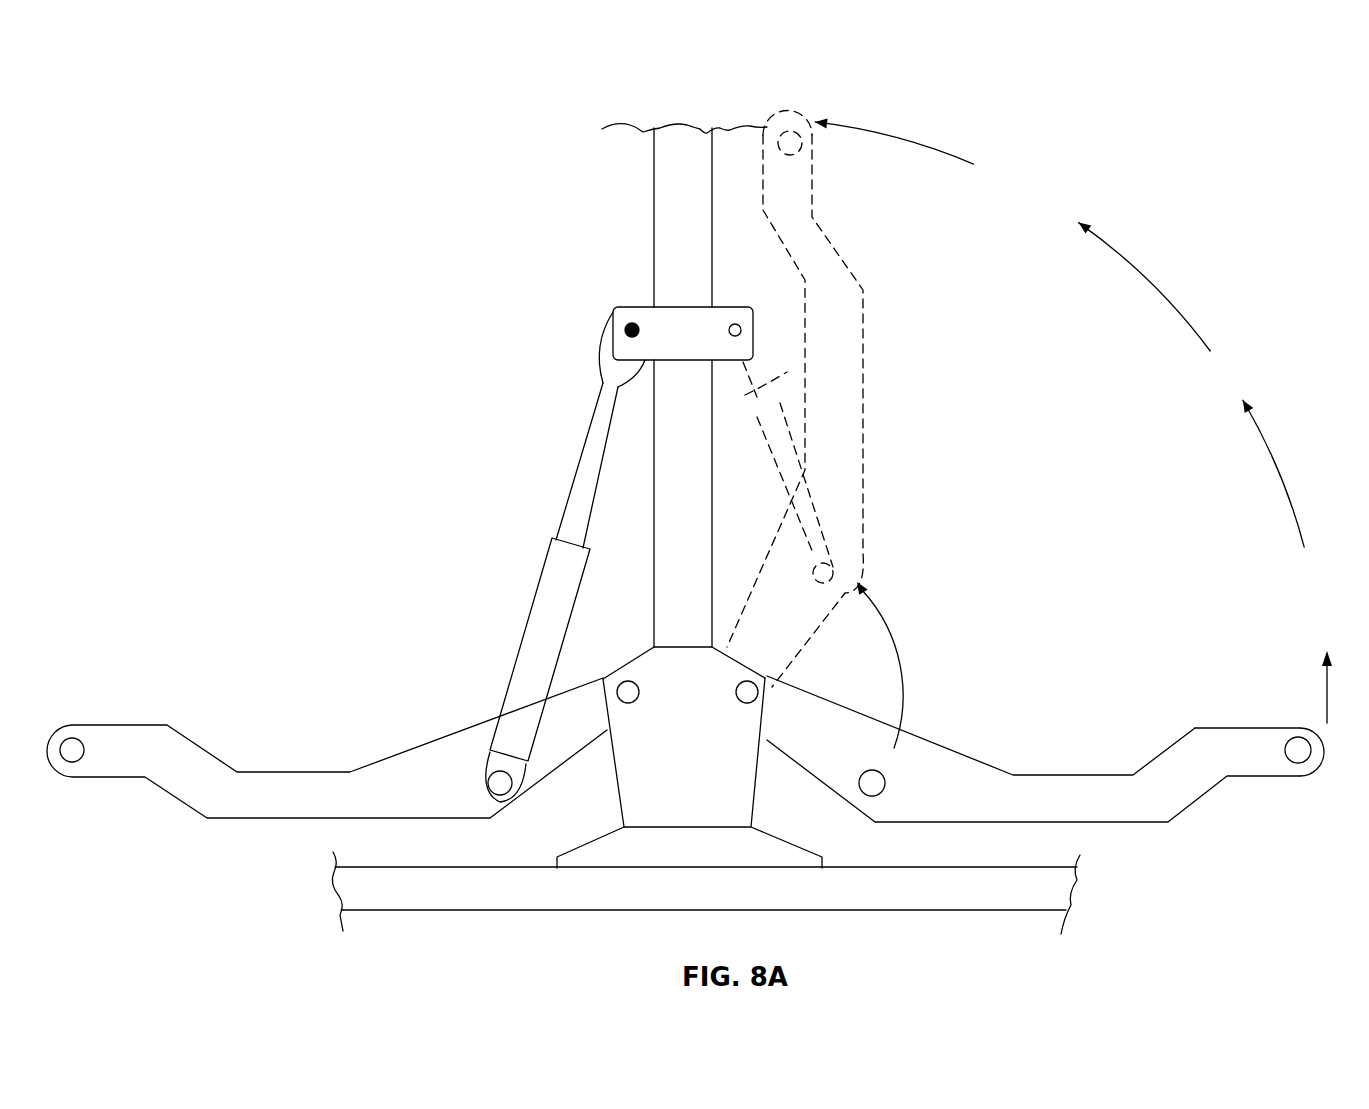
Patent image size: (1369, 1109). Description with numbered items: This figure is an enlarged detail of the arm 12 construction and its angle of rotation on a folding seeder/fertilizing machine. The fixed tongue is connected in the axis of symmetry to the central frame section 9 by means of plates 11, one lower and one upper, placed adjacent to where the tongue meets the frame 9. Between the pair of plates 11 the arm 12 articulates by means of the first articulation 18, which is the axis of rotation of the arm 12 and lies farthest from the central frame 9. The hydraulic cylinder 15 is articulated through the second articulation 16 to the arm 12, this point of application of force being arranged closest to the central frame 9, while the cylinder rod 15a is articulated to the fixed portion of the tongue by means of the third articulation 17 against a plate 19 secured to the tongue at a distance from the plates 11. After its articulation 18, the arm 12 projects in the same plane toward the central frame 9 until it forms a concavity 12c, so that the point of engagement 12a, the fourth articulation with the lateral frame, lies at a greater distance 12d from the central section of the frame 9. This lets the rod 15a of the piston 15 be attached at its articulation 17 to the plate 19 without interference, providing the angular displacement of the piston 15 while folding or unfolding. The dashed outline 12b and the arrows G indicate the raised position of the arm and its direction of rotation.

The central frame section 9 is at (1025, 893).
The plates 11 is at (655, 757).
The arm 12 is at (130, 753).
The point of engagement 12a is at (1318, 773).
The arm in raised position 12b is at (868, 360).
The concavity 12c is at (1093, 775).
The distance 12d is at (1250, 722).
The hydraulic cylinder 15 is at (547, 610).
The cylinder rod 15a is at (590, 477).
The second articulation 16 is at (490, 779).
The third articulation 17 is at (632, 330).
The first articulation 18 is at (600, 678).
The plate 19 is at (665, 332).
The rotation direction G is at (1059, 433).